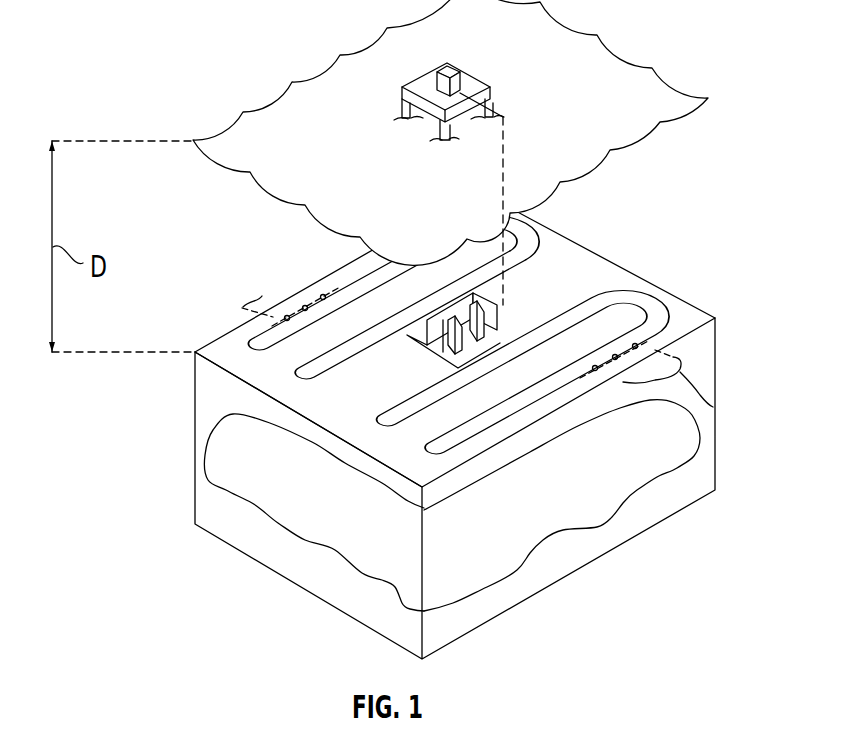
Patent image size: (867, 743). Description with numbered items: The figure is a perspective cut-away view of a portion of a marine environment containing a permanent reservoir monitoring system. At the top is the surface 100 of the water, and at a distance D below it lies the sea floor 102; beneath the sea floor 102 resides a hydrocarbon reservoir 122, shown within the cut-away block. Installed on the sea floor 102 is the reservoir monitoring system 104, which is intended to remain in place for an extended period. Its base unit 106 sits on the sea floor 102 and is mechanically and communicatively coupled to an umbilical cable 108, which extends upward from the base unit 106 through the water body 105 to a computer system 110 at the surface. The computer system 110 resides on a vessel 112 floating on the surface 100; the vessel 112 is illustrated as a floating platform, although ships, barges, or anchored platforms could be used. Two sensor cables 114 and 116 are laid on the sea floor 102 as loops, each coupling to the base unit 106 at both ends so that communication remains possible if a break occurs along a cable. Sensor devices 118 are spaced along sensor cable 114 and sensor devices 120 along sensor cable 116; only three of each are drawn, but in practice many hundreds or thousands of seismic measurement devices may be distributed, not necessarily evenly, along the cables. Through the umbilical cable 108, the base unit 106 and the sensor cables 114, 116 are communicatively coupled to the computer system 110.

The surface 100 is at (333, 177).
The sea floor 102 is at (193, 358).
The reservoir monitoring system 104 is at (222, 297).
The water body 105 is at (334, 267).
The base unit 106 is at (486, 296).
The umbilical cable 108 is at (527, 264).
The computer system 110 is at (447, 64).
The vessel 112 is at (423, 92).
The sensor cable 114 is at (293, 378).
The sensor cable 116 is at (378, 420).
The sensor devices 118 is at (262, 296).
The sensor devices 120 is at (713, 407).
The hydrocarbon reservoir 122 is at (503, 551).